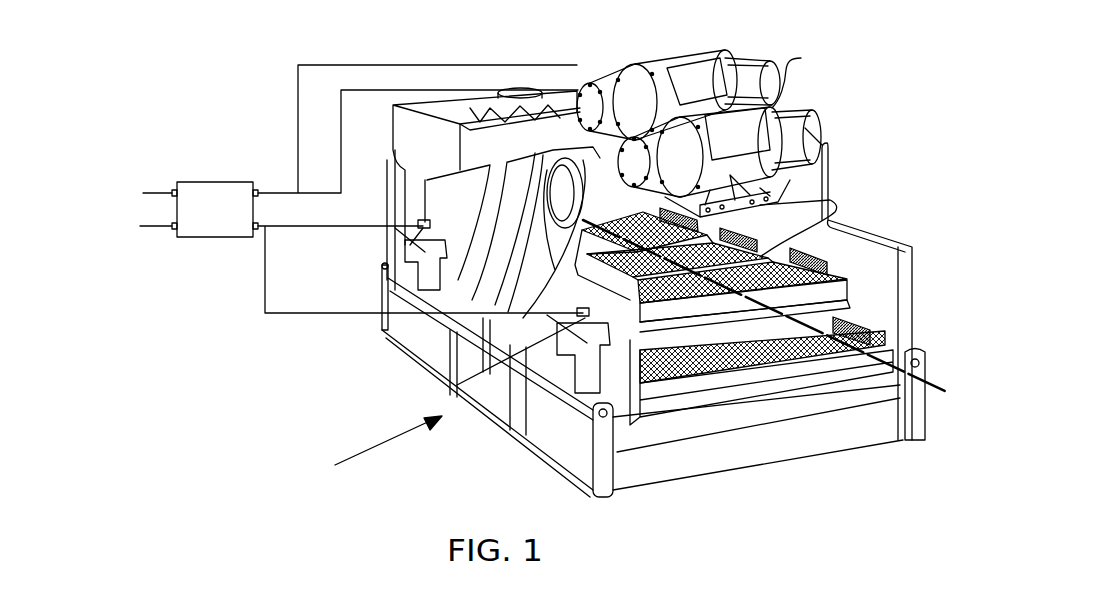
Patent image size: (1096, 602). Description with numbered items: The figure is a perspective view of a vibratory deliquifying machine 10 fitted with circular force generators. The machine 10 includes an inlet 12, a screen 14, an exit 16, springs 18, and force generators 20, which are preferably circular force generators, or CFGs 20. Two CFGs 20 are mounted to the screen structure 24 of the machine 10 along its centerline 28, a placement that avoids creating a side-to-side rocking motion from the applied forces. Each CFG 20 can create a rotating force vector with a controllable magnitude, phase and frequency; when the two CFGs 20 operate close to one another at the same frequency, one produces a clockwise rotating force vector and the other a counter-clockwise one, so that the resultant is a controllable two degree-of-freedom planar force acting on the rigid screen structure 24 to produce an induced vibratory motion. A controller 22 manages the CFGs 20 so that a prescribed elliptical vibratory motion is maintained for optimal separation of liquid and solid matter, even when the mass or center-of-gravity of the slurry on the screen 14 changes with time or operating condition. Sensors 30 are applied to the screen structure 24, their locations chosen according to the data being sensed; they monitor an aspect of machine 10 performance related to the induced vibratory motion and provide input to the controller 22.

The vibratory deliquifying machine 10 is at (200, 74).
The inlet 12 is at (492, 99).
The screen 14 is at (758, 258).
The exit 16 is at (690, 375).
The springs 18 is at (859, 323).
The force generators (CFGs) 20 is at (693, 58).
The controller 22 is at (208, 229).
The screen structure 24 is at (821, 178).
The centerline 28 is at (762, 295).
The sensors 30 is at (458, 384).